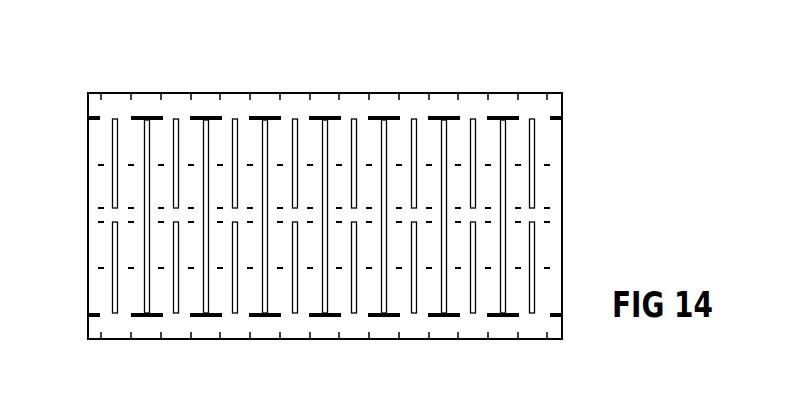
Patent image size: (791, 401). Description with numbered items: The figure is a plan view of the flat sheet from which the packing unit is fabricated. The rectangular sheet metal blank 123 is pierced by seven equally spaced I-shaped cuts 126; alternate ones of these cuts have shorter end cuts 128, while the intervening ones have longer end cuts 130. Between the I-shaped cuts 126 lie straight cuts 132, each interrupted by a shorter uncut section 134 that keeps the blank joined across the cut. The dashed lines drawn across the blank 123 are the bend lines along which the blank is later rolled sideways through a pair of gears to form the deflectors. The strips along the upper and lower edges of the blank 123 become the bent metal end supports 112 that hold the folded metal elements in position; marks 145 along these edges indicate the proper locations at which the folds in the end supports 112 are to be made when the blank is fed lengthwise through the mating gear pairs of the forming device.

The end support 112 is at (565, 105).
The sheet metal blank 123 is at (565, 152).
The I-shaped cut 126 is at (266, 145).
The shorter end cut 128 is at (203, 116).
The longer end cut 130 is at (253, 116).
The straight cut 132 is at (115, 135).
The uncut section 134 is at (117, 212).
The mark 145 is at (192, 94).